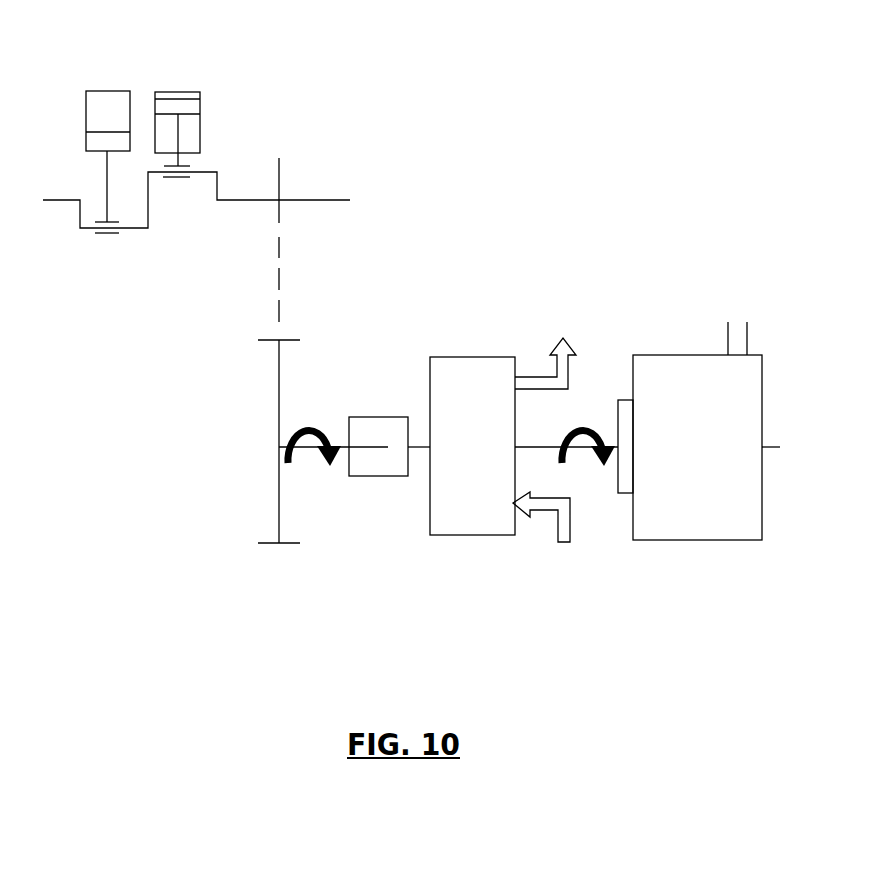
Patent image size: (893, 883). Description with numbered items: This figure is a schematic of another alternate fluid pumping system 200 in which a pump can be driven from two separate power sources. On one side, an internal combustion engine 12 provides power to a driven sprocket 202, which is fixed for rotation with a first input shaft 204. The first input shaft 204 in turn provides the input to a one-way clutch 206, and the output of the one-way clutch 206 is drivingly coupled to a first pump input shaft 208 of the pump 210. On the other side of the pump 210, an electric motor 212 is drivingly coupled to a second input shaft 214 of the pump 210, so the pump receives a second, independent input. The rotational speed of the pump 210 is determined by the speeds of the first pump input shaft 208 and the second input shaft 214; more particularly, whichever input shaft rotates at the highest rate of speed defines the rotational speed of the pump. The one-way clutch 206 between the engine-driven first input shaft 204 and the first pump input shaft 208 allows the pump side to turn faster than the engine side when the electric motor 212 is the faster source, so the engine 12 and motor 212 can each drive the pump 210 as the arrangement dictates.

The internal combustion engine 12 is at (140, 60).
The fluid pumping system 200 is at (458, 114).
The driven sprocket 202 is at (280, 375).
The first input shaft 204 is at (345, 446).
The one-way clutch 206 is at (375, 402).
The first pump input shaft 208 is at (422, 448).
The pump 210 is at (477, 522).
The electric motor 212 is at (690, 527).
The second input shaft 214 is at (532, 446).